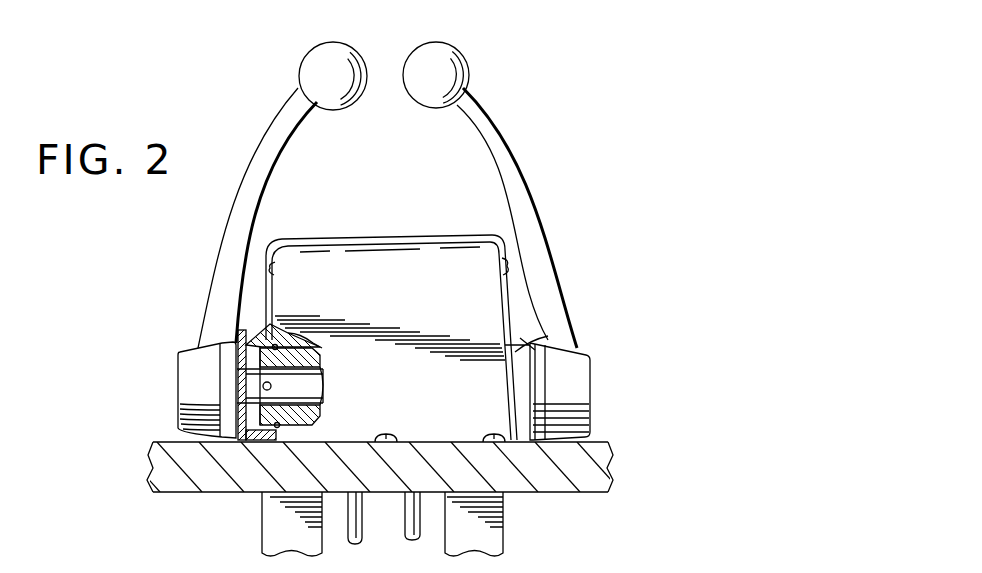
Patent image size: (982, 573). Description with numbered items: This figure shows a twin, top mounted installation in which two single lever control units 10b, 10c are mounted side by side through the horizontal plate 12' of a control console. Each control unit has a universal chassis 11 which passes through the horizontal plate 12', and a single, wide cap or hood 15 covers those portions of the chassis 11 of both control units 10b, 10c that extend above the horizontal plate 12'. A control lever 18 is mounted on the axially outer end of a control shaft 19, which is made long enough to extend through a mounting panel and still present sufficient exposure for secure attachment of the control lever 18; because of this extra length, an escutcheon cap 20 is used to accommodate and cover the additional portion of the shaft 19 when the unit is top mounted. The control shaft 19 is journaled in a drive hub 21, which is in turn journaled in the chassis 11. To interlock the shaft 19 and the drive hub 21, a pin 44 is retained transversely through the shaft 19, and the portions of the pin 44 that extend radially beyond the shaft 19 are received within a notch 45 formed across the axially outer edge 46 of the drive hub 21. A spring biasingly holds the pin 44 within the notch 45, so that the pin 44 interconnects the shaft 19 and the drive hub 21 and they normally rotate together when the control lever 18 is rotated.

The control unit 10b is at (190, 291).
The control unit 10c is at (586, 289).
The universal chassis 11 is at (254, 529).
The horizontal plate 12' is at (405, 463).
The cap or hood 15 is at (426, 250).
The control lever 18 is at (258, 221).
The control shaft 19 is at (317, 387).
The escutcheon cap 20 is at (249, 340).
The drive hub 21 is at (305, 359).
The pin 44 is at (260, 385).
The notch 45 is at (271, 388).
The axially outer edge 46 is at (248, 442).